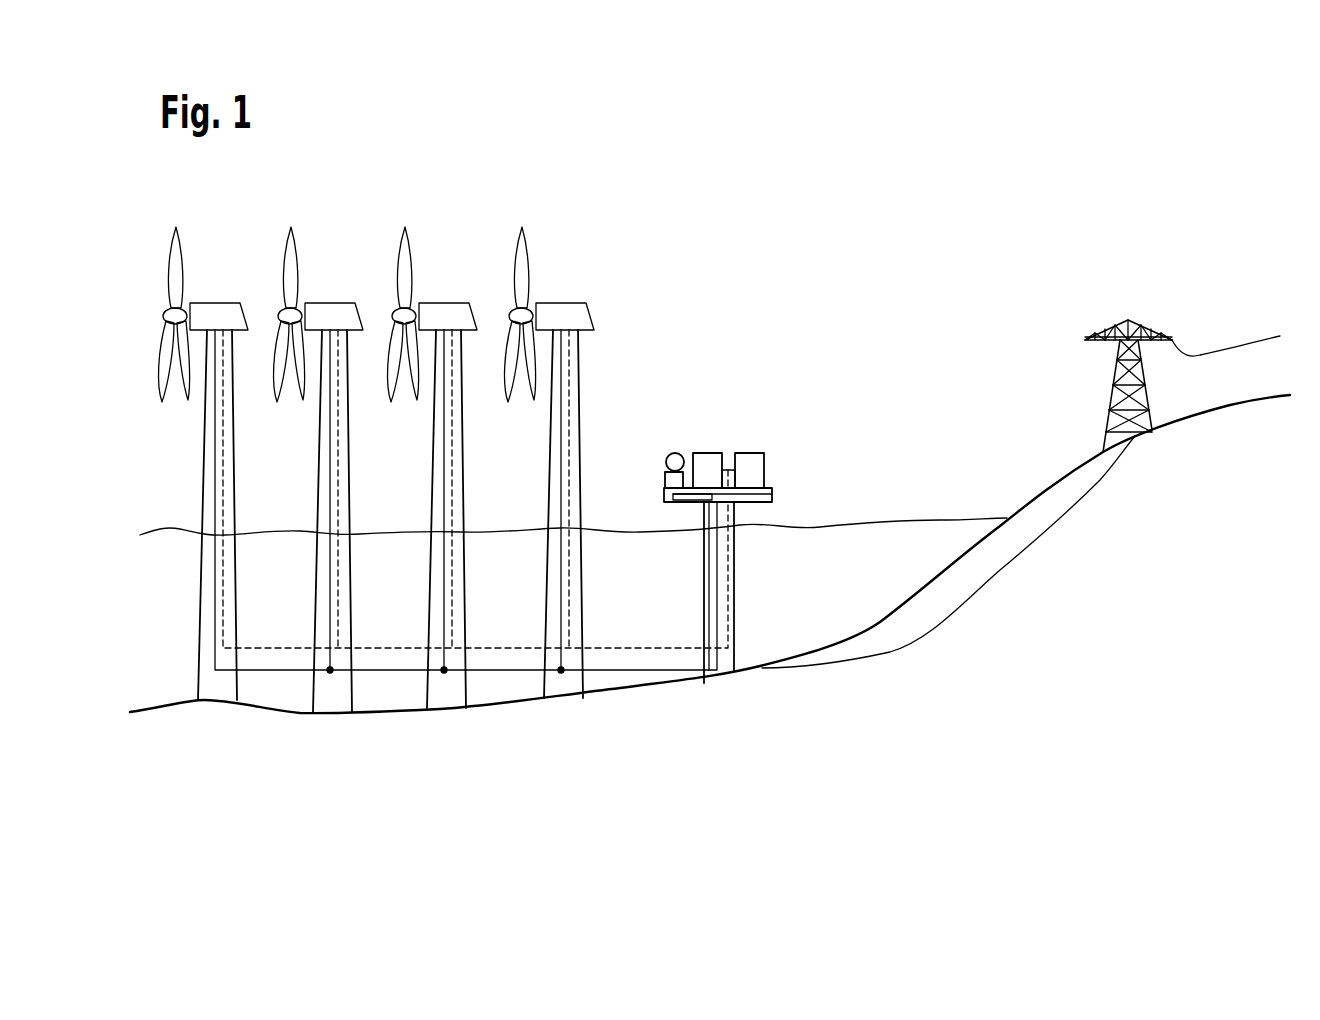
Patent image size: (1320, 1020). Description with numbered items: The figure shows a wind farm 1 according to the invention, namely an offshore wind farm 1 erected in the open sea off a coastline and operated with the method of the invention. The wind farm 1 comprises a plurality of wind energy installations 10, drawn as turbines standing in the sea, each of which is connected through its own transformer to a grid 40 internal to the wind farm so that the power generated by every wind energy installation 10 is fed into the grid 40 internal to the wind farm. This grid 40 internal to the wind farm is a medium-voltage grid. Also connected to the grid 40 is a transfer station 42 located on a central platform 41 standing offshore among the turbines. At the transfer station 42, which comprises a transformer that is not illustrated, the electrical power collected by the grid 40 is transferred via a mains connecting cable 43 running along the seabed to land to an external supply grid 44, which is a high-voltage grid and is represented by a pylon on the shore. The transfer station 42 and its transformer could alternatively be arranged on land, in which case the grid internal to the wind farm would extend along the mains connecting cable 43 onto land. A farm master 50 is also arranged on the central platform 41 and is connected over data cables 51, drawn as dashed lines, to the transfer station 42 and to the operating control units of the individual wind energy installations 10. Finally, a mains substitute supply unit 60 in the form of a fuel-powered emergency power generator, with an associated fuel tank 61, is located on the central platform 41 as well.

The wind farm 1 is at (894, 272).
The wind energy installation 10 is at (590, 279).
The grid internal to the wind farm 40 is at (622, 672).
The central platform 41 is at (773, 494).
The transfer station 42 is at (707, 458).
The mains connecting cable 43 is at (852, 667).
The external supply grid 44 is at (1243, 345).
The farm master 50 is at (750, 458).
The data cables 51 is at (495, 650).
The mains substitute supply unit 60 is at (670, 483).
The fuel tank 61 is at (676, 453).